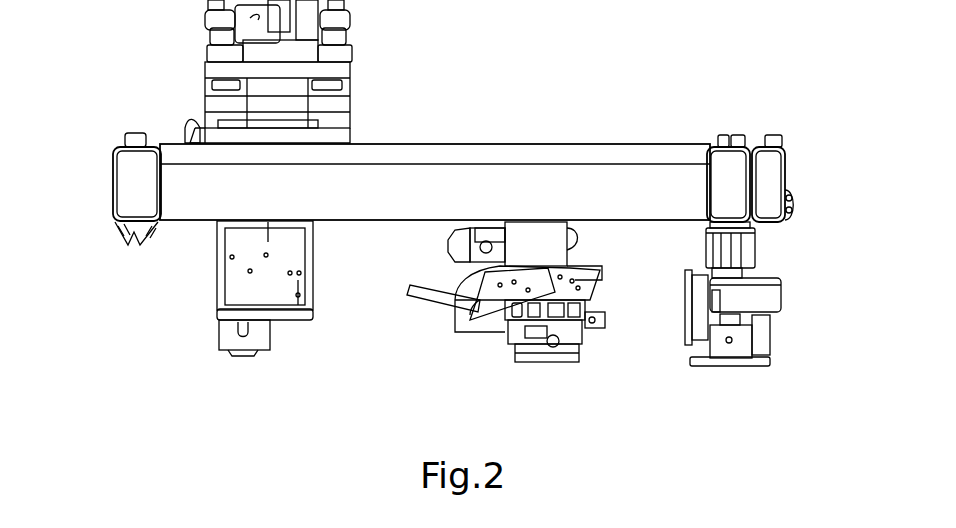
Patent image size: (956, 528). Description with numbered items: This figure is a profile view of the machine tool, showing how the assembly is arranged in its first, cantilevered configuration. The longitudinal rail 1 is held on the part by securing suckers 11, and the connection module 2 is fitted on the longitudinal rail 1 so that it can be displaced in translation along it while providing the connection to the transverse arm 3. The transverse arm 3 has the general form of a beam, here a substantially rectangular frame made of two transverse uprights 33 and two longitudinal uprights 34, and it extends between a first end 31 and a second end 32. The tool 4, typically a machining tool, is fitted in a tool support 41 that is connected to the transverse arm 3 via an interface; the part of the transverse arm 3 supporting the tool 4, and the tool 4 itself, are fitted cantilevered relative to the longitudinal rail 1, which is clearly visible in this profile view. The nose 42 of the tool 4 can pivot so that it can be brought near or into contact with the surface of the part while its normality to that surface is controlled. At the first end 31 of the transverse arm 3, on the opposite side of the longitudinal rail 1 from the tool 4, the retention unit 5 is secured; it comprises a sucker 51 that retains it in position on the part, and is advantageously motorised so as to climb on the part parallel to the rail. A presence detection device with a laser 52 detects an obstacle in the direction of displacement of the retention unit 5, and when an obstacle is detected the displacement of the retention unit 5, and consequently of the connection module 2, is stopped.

The longitudinal rail 1 is at (548, 362).
The connection module 2 is at (530, 245).
The transverse arm 3 is at (668, 176).
The tool 4 is at (240, 283).
The retention unit 5 is at (740, 242).
The securing suckers 11 is at (580, 355).
The first end 31 is at (785, 165).
The second end 32 is at (113, 168).
The transverse uprights 33 is at (555, 176).
The longitudinal uprights 34 is at (113, 190).
The tool support 41 is at (262, 98).
The nose 42 is at (242, 353).
The sucker 51 is at (755, 334).
The laser 52 is at (730, 342).